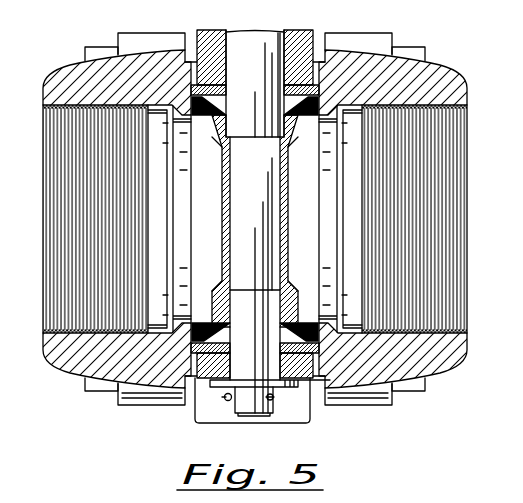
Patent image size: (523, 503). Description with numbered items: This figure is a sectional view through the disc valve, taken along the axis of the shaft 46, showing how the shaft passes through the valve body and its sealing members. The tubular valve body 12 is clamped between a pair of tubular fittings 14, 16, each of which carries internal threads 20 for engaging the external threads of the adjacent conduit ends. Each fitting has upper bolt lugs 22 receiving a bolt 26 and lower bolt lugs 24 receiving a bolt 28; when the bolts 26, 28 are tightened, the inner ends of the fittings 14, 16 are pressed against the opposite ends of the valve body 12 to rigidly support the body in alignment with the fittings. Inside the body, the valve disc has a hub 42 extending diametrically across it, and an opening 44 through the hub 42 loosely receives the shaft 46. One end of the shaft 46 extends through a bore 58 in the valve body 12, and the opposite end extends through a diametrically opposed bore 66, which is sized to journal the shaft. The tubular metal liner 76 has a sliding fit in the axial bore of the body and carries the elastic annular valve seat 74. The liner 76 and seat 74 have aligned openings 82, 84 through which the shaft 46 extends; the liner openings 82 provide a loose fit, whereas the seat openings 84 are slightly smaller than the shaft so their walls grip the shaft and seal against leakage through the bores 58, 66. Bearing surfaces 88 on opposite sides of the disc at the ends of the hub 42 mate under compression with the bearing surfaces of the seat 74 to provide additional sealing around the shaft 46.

The tubular valve body 12 is at (206, 40).
The tubular fitting 14 is at (57, 80).
The tubular fitting 16 is at (457, 92).
The internal threads 20 is at (62, 182).
The upper bolt lugs 22 is at (129, 40).
The lower bolt lugs 24 is at (134, 406).
The bolt 26 is at (95, 52).
The bolt 28 is at (100, 388).
The hub 42 is at (229, 183).
The opening 44 is at (230, 183).
The shaft 46 is at (250, 202).
The bore 58 is at (288, 387).
The bore 66 is at (286, 32).
The annular valve seat 74 is at (318, 108).
The metal liner 76 is at (313, 80).
The openings in the liner 82 is at (222, 90).
The openings in the valve seat 84 is at (244, 101).
The bearing surfaces 88 is at (289, 138).